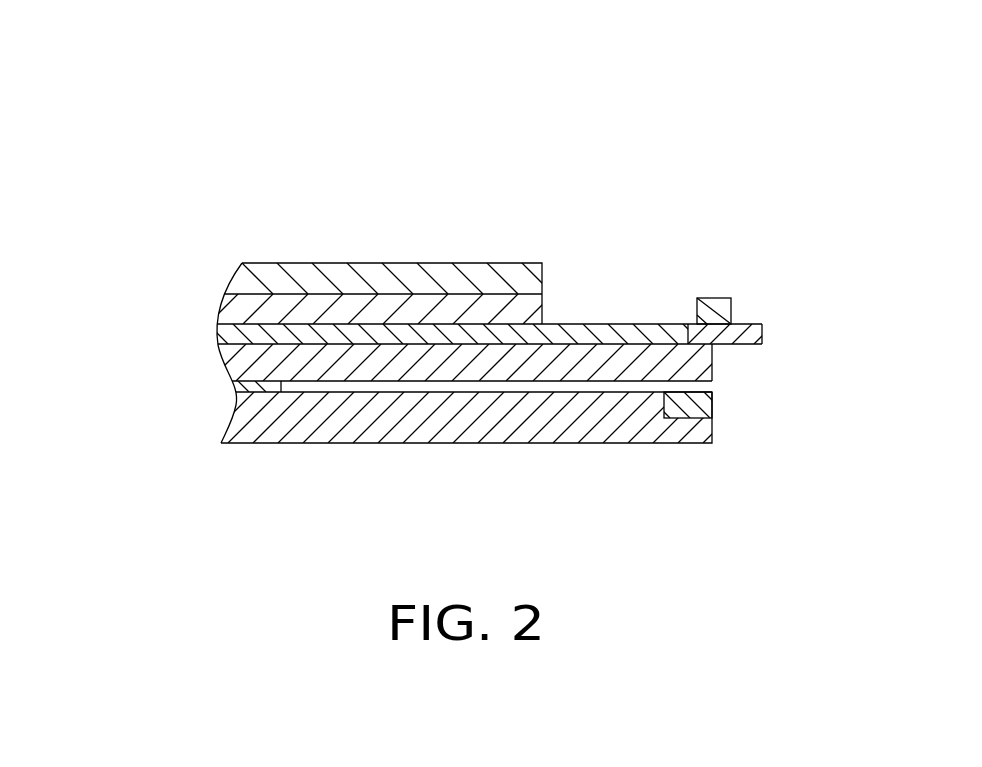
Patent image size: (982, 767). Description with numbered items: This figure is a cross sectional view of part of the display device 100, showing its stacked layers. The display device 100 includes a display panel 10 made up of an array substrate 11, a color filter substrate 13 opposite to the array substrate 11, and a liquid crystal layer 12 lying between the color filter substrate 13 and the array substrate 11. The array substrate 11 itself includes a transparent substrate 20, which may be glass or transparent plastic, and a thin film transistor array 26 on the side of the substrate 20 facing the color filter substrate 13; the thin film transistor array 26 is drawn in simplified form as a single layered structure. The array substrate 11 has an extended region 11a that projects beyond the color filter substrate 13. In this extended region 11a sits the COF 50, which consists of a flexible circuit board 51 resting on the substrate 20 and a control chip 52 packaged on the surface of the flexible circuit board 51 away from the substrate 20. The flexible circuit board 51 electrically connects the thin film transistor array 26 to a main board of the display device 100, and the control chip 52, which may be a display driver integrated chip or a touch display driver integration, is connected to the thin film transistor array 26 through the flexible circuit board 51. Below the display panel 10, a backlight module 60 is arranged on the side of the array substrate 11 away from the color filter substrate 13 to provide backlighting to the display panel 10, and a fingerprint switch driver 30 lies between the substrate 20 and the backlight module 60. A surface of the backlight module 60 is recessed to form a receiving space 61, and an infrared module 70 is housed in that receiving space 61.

The display device 100 is at (461, 80).
The display panel 10 is at (103, 257).
The color filter substrate 13 is at (253, 283).
The liquid crystal layer 12 is at (253, 312).
The array substrate 11 is at (152, 323).
The extended region 11a is at (600, 324).
The thin film transistor array 26 is at (250, 334).
The substrate 20 is at (250, 360).
The fingerprint switch driver 30 is at (250, 385).
The COF 50 is at (817, 207).
The control chip 52 is at (710, 315).
The flexible circuit board 51 is at (752, 335).
The receiving space 61 is at (687, 392).
The infrared module 70 is at (693, 403).
The backlight module 60 is at (697, 435).